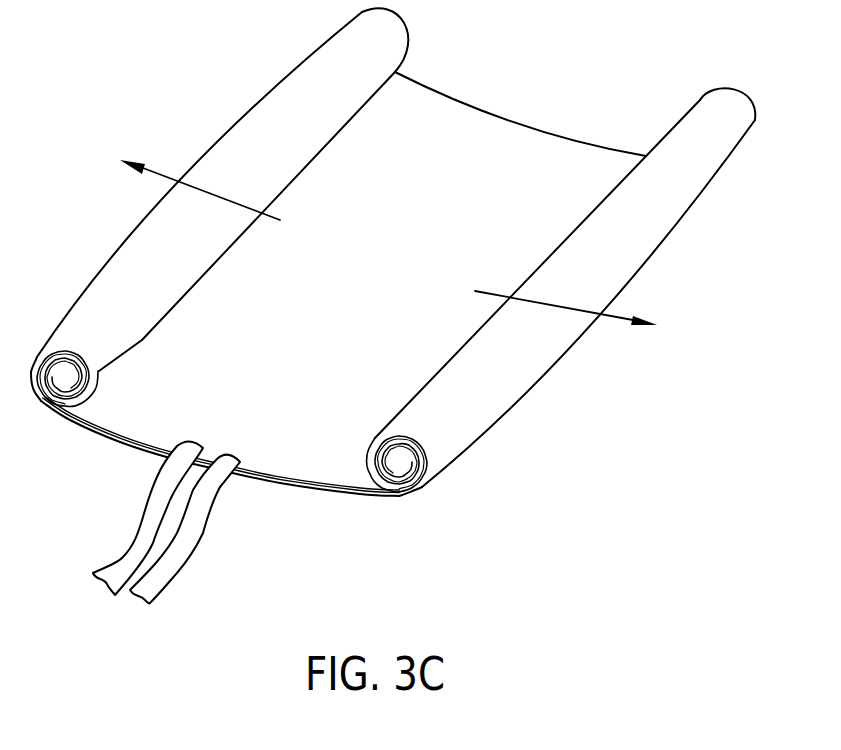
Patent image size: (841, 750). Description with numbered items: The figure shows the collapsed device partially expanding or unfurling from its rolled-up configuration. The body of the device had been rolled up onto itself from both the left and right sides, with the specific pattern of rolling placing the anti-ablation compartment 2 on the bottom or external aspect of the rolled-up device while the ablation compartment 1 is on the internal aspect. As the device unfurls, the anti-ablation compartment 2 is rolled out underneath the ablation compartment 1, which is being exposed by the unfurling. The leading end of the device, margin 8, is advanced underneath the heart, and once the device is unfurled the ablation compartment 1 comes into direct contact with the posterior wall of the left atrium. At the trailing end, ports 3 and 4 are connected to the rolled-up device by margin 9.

The ablation compartment 1 is at (527, 365).
The anti-ablation compartment 2 is at (250, 128).
The port 3 is at (128, 552).
The port 4 is at (185, 550).
The margin 8 is at (493, 117).
The margin 9 is at (308, 500).